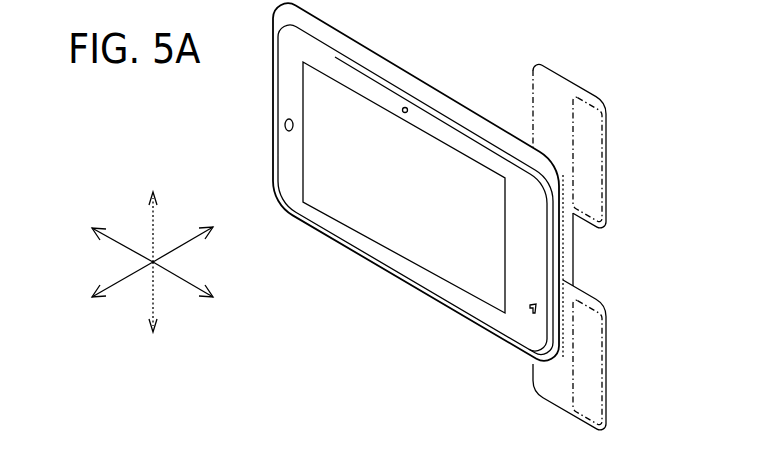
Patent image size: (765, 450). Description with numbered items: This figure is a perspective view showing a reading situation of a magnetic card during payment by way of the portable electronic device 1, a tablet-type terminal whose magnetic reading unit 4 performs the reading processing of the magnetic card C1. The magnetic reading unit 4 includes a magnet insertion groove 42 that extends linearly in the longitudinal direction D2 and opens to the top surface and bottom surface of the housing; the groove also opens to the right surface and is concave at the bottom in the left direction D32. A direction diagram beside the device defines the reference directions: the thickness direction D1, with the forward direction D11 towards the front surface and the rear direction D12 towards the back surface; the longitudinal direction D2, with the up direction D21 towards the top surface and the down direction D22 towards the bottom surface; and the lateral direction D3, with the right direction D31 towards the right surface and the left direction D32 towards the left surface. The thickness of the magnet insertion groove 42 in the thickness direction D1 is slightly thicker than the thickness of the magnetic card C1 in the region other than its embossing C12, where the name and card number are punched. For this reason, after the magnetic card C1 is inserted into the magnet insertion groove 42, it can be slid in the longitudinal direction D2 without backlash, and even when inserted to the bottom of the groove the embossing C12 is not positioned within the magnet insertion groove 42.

The portable electronic device 1 is at (416, 181).
The magnetic reading unit 4 is at (417, 187).
The magnet insertion groove 42 is at (616, 255).
The magnetic card C1 is at (602, 364).
The embossing C12 is at (602, 338).
The thickness direction D1 is at (152, 265).
The forward direction D11 is at (100, 292).
The rear direction D12 is at (205, 235).
The longitudinal direction D2 is at (138, 261).
The up direction D21 is at (152, 211).
The down direction D22 is at (153, 293).
The lateral direction D3 is at (152, 257).
The right direction D31 is at (205, 290).
The left direction D32 is at (100, 232).